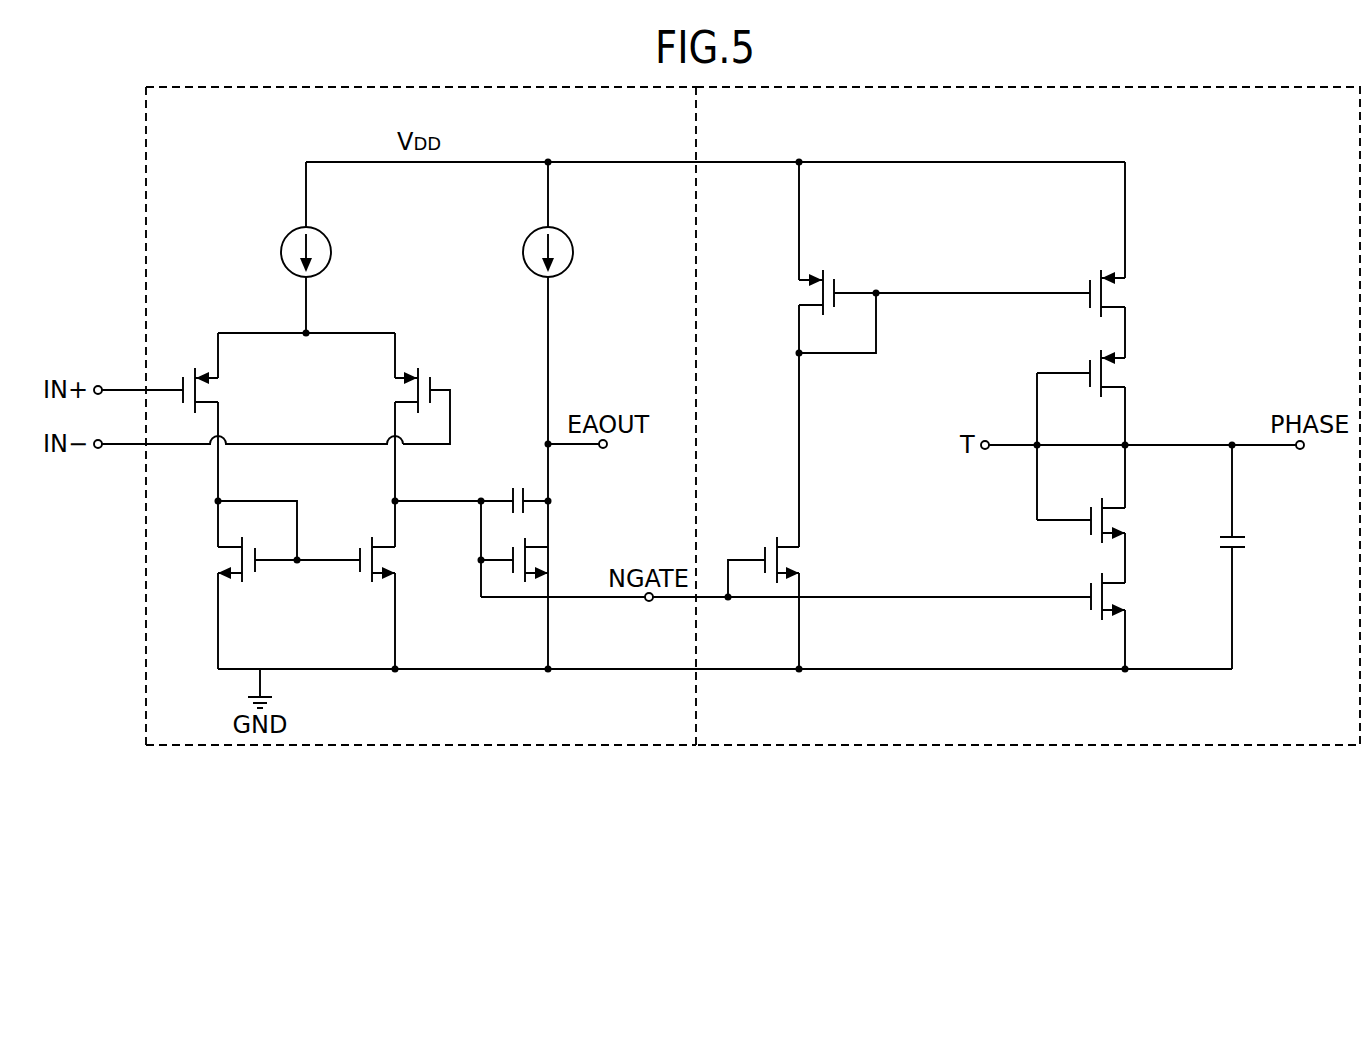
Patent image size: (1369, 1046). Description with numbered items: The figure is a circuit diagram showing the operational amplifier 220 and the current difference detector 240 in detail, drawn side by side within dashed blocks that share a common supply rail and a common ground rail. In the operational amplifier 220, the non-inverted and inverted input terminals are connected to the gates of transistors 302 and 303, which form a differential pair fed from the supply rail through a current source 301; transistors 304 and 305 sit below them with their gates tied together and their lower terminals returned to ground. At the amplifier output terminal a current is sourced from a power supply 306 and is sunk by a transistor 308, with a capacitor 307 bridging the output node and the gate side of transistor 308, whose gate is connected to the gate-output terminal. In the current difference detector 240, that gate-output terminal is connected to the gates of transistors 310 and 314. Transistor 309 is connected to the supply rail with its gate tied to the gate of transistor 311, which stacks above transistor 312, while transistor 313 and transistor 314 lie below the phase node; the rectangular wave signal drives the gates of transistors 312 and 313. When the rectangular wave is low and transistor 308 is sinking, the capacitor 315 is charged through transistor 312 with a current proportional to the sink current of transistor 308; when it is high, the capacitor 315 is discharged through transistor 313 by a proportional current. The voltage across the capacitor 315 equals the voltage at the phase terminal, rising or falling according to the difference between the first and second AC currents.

The operational amplifier 220 is at (263, 136).
The current difference detector 240 is at (778, 137).
The current source 301 is at (332, 247).
The transistor 302 is at (227, 417).
The transistor 303 is at (397, 417).
The transistor 304 is at (257, 585).
The transistor 305 is at (346, 585).
The power supply 306 is at (575, 303).
The capacitor 307 is at (514, 485).
The transistor 308 is at (543, 560).
The transistor 309 is at (812, 257).
The transistor 310 is at (792, 511).
The transistor 311 is at (1136, 260).
The transistor 312 is at (1109, 435).
The transistor 313 is at (1109, 514).
The transistor 314 is at (1136, 621).
The capacitor 315 is at (1259, 557).